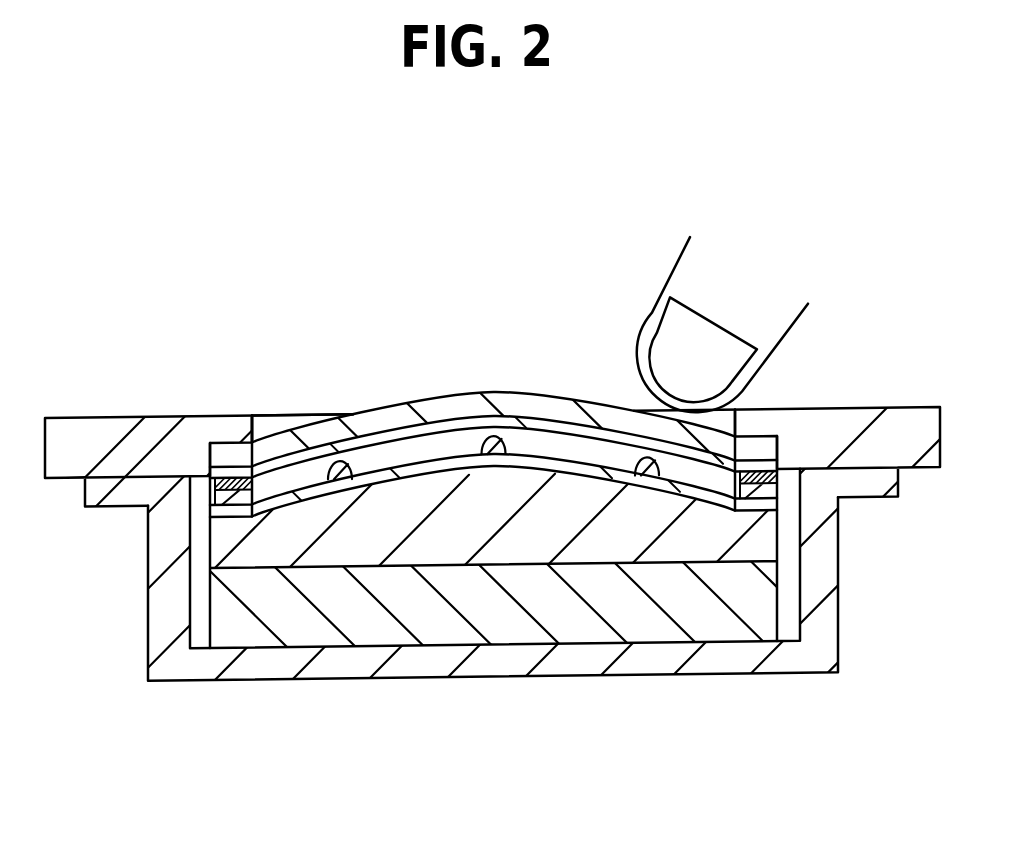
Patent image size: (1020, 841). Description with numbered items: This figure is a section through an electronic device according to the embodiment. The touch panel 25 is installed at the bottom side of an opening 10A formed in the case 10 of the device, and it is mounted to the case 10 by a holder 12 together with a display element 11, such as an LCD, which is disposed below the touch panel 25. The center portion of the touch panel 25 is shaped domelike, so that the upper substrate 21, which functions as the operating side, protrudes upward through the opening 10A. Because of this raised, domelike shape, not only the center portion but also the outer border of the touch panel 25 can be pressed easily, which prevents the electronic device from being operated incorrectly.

The case 10 is at (115, 424).
The opening 10A is at (270, 430).
The upper substrate 21 is at (440, 402).
The touch panel 25 is at (598, 562).
The display element 11 is at (435, 637).
The holder 12 is at (260, 676).